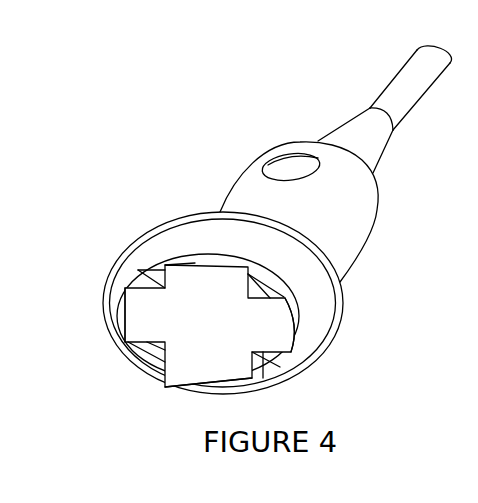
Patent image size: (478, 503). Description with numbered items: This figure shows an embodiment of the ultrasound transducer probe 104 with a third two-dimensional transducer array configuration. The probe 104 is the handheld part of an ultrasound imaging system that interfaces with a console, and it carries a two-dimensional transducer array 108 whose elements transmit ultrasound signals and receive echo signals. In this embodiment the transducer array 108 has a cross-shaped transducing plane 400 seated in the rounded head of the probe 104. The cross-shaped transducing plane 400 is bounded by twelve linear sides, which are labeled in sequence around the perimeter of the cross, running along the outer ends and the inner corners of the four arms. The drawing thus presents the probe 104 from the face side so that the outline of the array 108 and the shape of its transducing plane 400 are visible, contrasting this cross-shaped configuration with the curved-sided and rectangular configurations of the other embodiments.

The ultrasound transducer probe 104 is at (253, 160).
The cross-shaped transducing plane 400 is at (223, 303).
The two-dimensional transducer array 108 is at (216, 319).